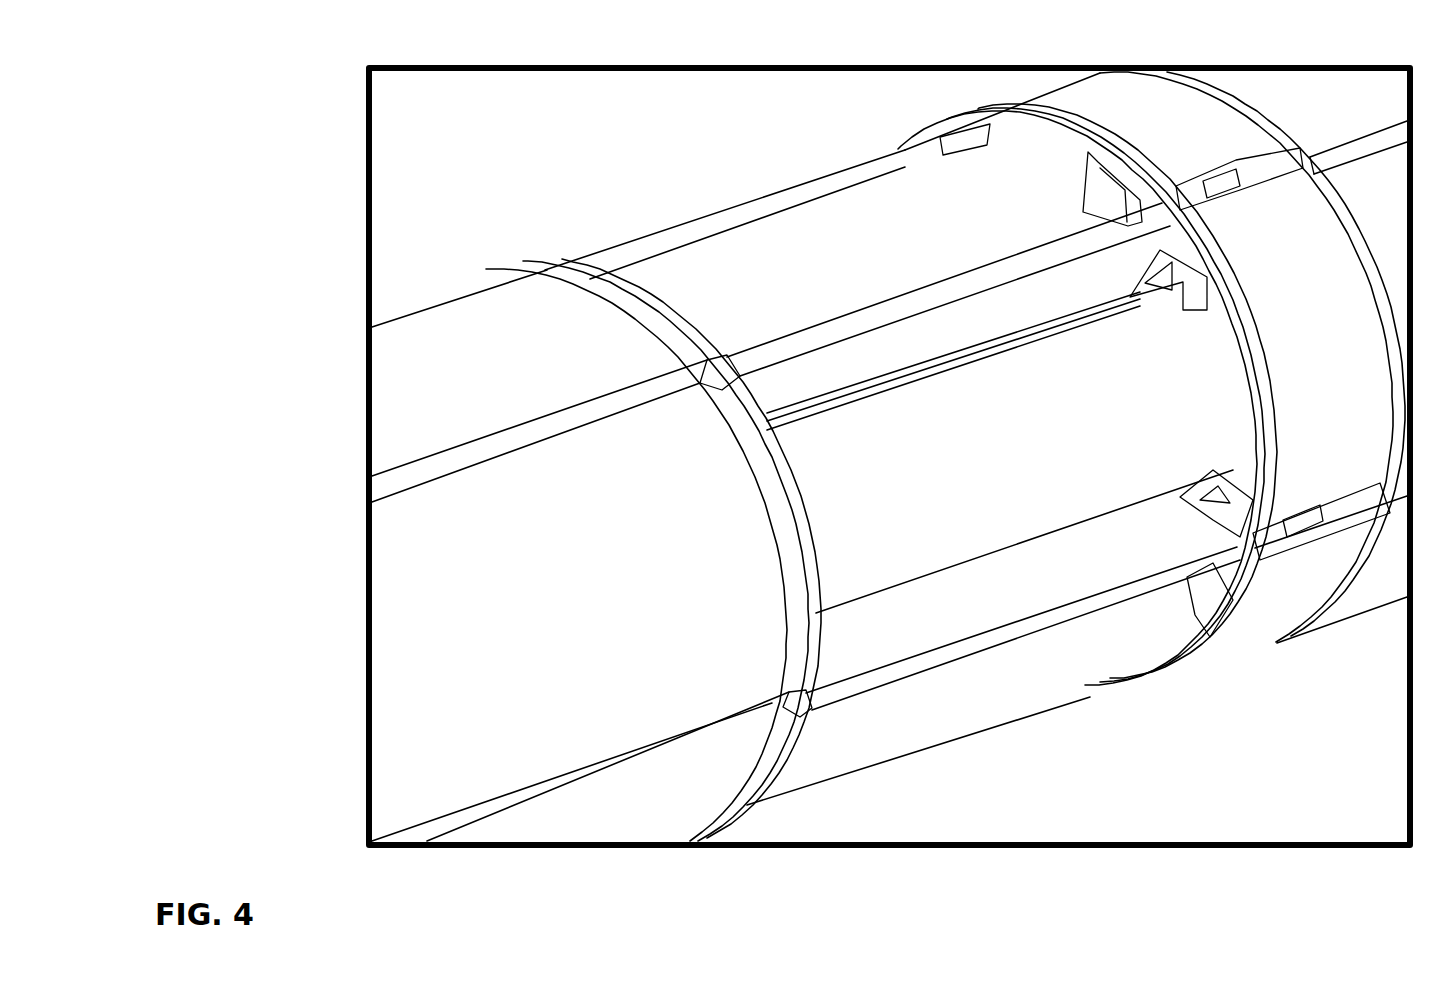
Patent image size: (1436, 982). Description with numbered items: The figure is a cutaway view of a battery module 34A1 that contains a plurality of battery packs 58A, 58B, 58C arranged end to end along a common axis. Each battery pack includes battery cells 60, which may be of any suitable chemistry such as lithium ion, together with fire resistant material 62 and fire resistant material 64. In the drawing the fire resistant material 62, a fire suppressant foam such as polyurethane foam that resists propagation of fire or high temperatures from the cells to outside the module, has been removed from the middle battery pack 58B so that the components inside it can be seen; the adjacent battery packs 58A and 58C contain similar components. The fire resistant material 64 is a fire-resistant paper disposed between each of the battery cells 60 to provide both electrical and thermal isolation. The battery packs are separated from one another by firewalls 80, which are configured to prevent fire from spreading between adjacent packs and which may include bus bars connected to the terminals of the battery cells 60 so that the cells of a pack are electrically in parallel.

The battery module 34A1 is at (488, 122).
The battery pack 58A is at (408, 282).
The battery pack 58B is at (730, 186).
The battery pack 58C is at (1258, 82).
The battery cells 60 is at (827, 300).
The fire resistant material 62 is at (516, 388).
The fire resistant material 64 is at (667, 240).
The firewalls 80 is at (543, 283).